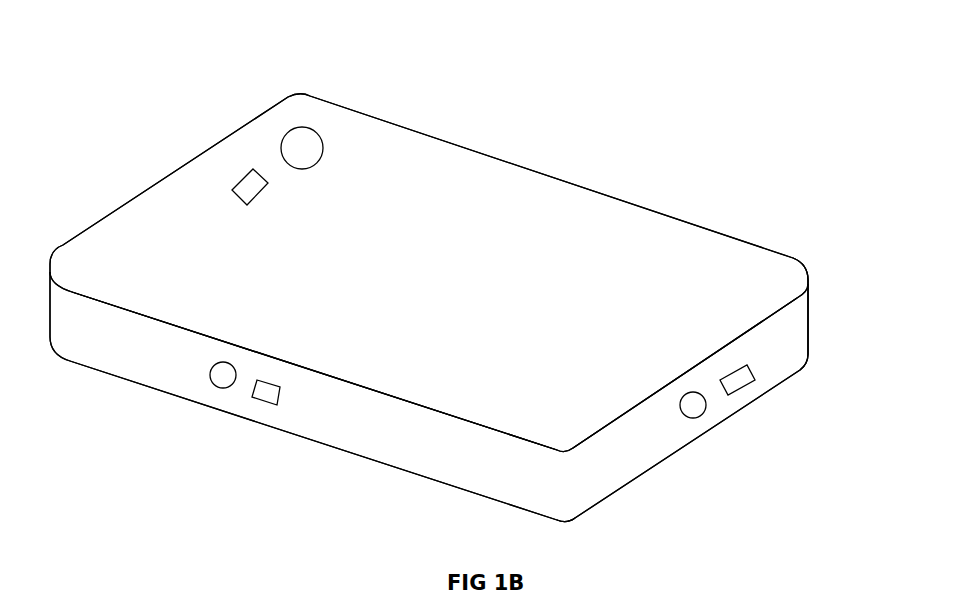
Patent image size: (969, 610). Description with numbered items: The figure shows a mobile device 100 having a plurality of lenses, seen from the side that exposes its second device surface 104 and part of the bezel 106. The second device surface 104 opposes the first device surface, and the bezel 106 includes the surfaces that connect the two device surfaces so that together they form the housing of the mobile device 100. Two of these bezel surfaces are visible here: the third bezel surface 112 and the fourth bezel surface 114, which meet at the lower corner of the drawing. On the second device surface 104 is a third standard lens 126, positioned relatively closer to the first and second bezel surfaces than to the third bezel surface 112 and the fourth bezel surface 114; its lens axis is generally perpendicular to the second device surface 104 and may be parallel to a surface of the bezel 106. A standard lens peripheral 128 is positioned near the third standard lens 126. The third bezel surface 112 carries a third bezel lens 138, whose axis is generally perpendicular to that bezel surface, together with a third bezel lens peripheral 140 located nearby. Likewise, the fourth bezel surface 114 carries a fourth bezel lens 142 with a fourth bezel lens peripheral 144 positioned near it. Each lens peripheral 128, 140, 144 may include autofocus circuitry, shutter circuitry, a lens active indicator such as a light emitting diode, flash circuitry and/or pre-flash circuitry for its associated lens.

The mobile device 100 is at (521, 68).
The second device surface 104 is at (570, 184).
The bezel 106 is at (841, 320).
The third bezel surface 112 is at (641, 465).
The fourth bezel surface 114 is at (344, 450).
The third standard lens 126 is at (320, 159).
The standard lens peripheral 128 is at (255, 202).
The third bezel lens 138 is at (685, 393).
The third bezel lens peripheral 140 is at (757, 374).
The fourth bezel lens 142 is at (210, 364).
The fourth bezel lens peripheral 144 is at (296, 386).